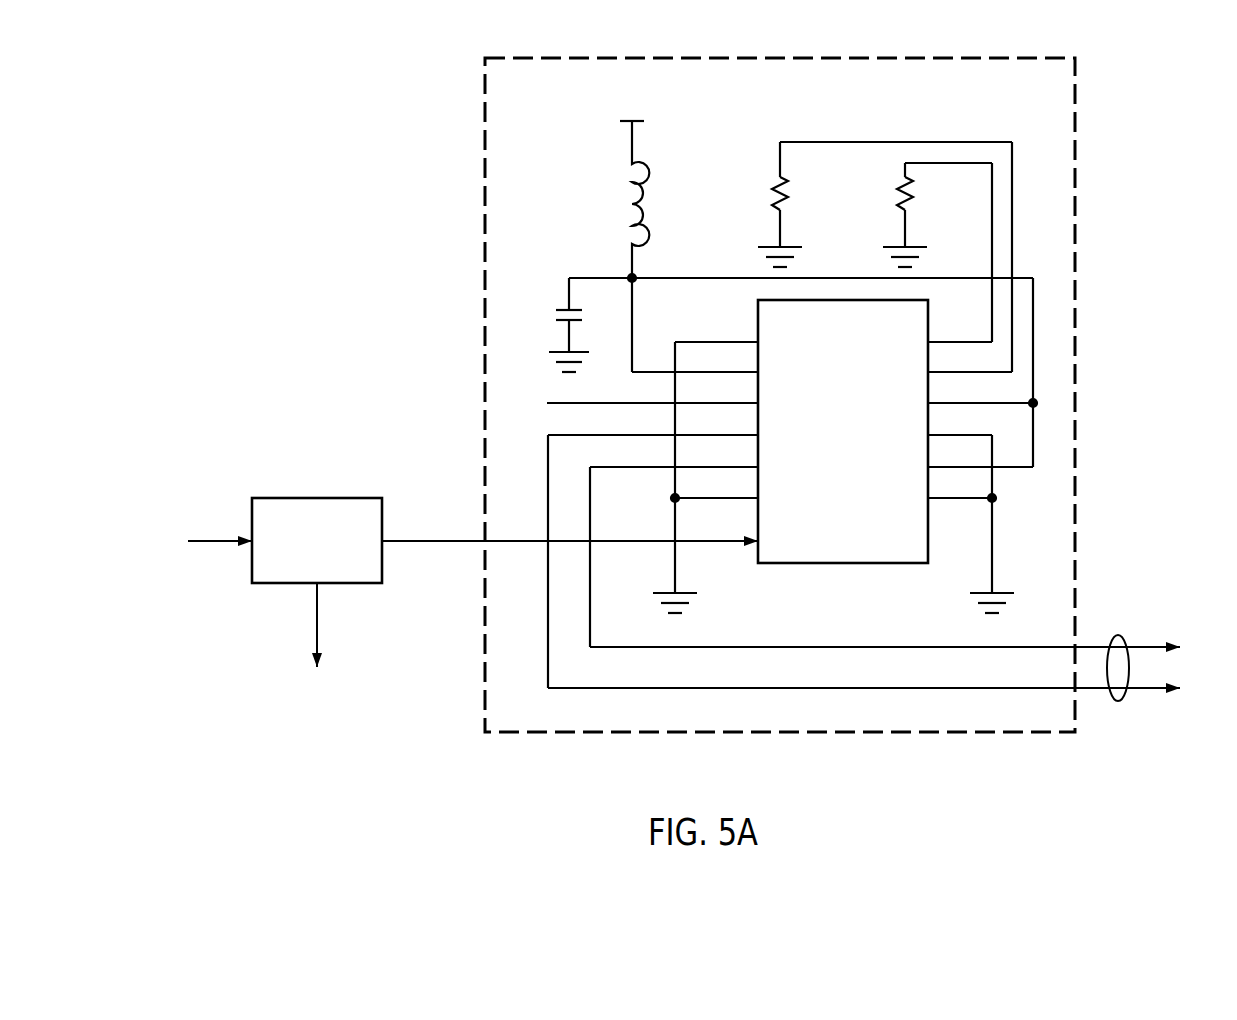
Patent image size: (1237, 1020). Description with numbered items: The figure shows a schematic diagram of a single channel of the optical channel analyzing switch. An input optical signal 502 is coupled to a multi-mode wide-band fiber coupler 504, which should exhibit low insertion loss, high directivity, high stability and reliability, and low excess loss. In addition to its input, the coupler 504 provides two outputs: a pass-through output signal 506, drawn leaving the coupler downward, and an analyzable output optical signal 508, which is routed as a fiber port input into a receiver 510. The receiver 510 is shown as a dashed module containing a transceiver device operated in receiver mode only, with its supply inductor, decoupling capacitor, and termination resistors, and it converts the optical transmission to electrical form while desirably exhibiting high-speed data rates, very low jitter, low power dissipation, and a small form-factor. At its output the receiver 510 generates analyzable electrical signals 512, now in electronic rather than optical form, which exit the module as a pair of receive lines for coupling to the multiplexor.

The input optical signal 502 is at (212, 541).
The multi-mode wide-band fiber coupler 504 is at (299, 568).
The pass-through output signal 506 is at (320, 612).
The analyzable output optical signal 508 is at (388, 541).
The receiver 510 is at (832, 58).
The analyzable electrical signals 512 is at (1118, 635).